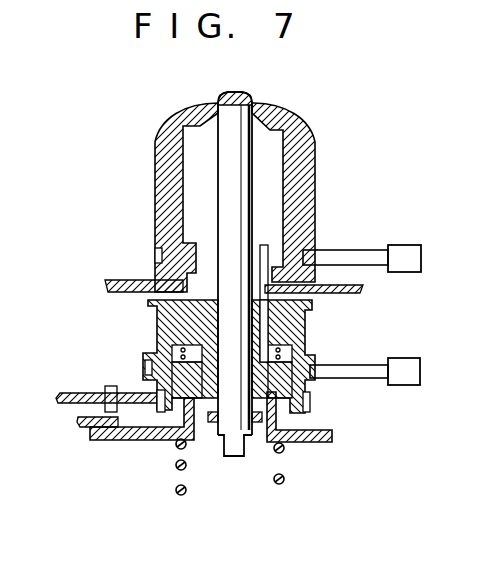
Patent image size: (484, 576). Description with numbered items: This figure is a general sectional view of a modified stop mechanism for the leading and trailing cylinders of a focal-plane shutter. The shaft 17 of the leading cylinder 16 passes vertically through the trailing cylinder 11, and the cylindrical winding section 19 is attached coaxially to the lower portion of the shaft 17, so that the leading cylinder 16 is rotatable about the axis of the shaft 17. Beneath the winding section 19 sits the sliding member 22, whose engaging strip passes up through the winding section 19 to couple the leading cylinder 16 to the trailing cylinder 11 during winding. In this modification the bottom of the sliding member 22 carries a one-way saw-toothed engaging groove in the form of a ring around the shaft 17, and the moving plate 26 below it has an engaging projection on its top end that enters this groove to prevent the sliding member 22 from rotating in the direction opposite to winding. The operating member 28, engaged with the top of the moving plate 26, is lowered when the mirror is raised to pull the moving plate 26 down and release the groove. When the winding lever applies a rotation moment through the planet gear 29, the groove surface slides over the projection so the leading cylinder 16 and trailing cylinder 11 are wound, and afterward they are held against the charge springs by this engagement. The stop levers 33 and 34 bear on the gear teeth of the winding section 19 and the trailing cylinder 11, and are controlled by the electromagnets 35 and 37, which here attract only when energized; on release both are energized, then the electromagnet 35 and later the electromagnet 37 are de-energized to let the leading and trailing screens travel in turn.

The trailing cylinder 11 is at (306, 172).
The leading cylinder 16 is at (256, 93).
The shaft 17 is at (245, 200).
The winding section 19 is at (296, 332).
The sliding member 22 is at (303, 396).
The moving plate 26 is at (125, 440).
The operating member 28 is at (78, 421).
The planet gear 29 is at (88, 398).
The stop lever 33 is at (362, 378).
The stop lever 34 is at (343, 252).
The electromagnet 35 is at (405, 360).
The electromagnet 37 is at (405, 246).